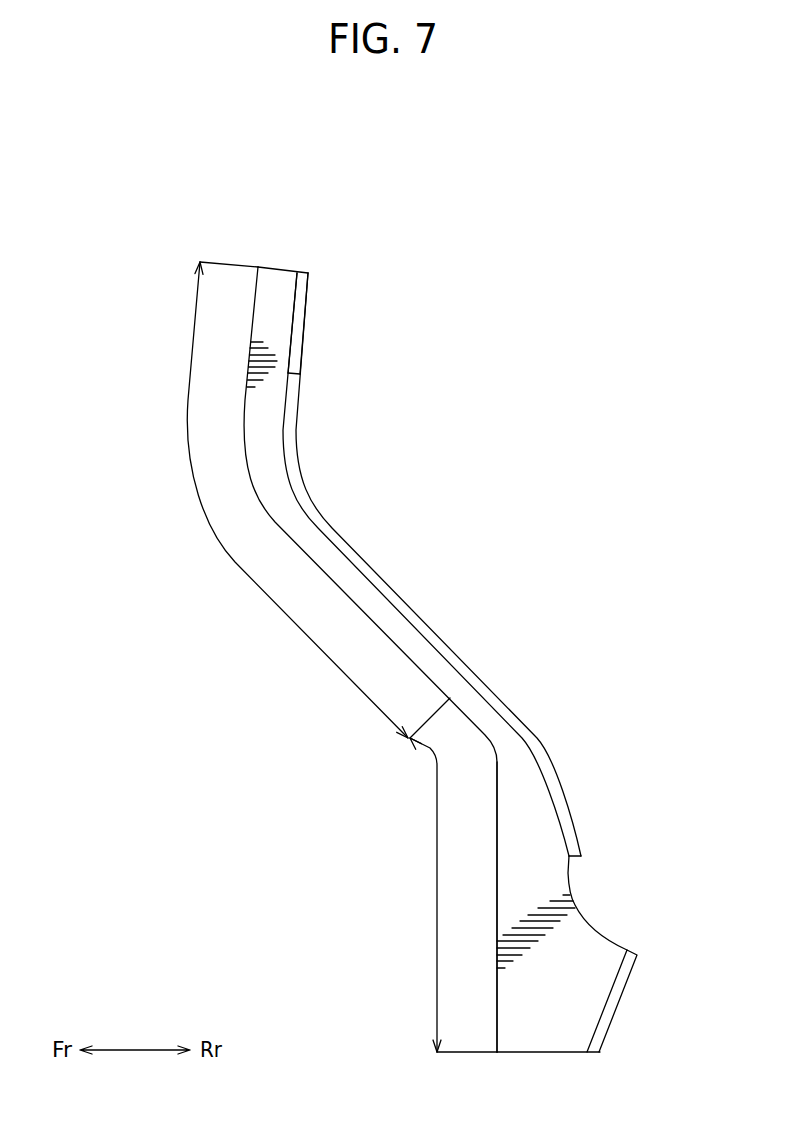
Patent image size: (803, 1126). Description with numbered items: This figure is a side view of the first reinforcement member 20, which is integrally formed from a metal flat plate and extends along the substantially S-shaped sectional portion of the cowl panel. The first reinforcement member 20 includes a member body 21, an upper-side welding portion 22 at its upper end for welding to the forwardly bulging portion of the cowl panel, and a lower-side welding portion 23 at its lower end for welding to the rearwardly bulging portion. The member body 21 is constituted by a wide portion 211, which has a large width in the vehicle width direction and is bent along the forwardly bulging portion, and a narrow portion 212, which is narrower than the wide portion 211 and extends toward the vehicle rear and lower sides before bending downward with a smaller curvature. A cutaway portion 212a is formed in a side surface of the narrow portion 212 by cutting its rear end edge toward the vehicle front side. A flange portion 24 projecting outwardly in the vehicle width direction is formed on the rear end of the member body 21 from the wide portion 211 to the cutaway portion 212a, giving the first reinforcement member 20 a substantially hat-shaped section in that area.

The first reinforcement member 20 is at (113, 220).
The member body 21 is at (266, 512).
The upper-side welding portion 22 is at (290, 322).
The flange portion 24 is at (370, 586).
The wide portion 211 is at (304, 500).
The narrow portion 212 is at (444, 895).
The cutaway portion 212a is at (572, 900).
The lower-side welding portion 23 is at (598, 1028).